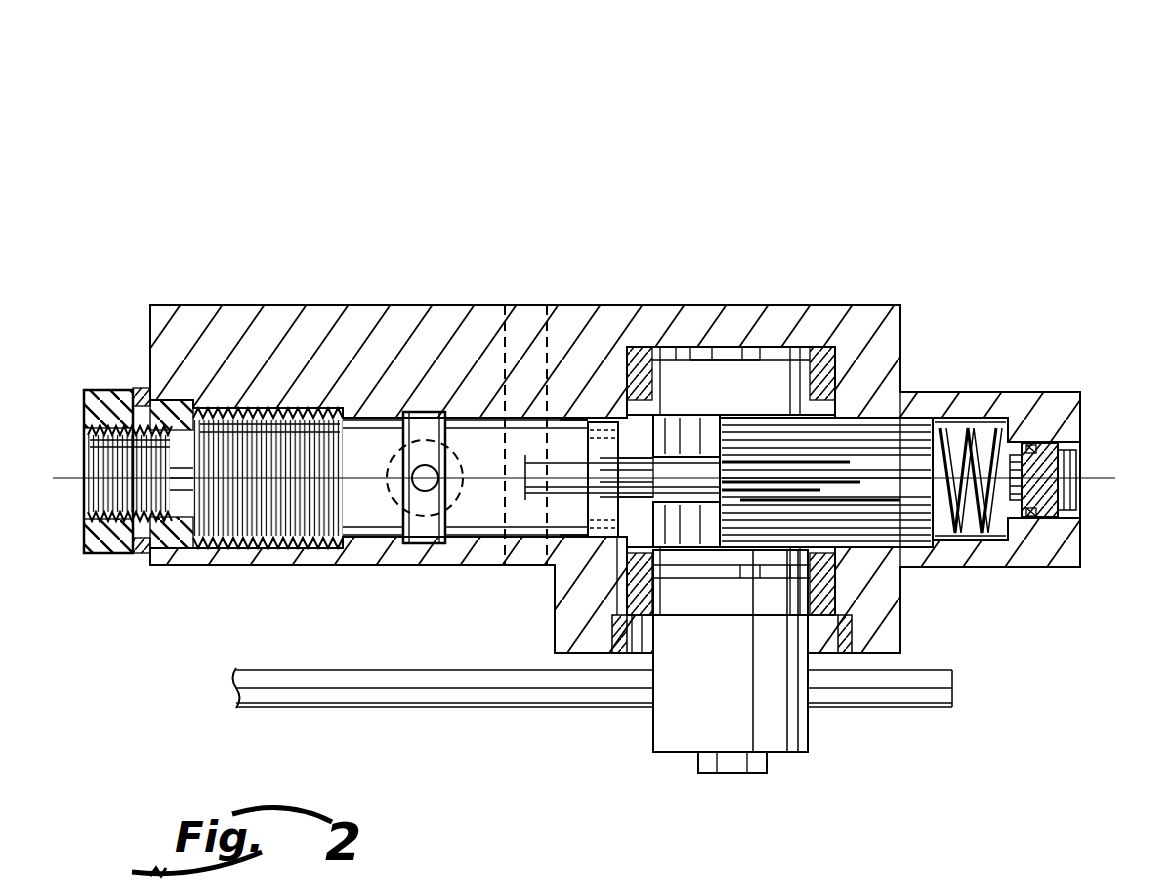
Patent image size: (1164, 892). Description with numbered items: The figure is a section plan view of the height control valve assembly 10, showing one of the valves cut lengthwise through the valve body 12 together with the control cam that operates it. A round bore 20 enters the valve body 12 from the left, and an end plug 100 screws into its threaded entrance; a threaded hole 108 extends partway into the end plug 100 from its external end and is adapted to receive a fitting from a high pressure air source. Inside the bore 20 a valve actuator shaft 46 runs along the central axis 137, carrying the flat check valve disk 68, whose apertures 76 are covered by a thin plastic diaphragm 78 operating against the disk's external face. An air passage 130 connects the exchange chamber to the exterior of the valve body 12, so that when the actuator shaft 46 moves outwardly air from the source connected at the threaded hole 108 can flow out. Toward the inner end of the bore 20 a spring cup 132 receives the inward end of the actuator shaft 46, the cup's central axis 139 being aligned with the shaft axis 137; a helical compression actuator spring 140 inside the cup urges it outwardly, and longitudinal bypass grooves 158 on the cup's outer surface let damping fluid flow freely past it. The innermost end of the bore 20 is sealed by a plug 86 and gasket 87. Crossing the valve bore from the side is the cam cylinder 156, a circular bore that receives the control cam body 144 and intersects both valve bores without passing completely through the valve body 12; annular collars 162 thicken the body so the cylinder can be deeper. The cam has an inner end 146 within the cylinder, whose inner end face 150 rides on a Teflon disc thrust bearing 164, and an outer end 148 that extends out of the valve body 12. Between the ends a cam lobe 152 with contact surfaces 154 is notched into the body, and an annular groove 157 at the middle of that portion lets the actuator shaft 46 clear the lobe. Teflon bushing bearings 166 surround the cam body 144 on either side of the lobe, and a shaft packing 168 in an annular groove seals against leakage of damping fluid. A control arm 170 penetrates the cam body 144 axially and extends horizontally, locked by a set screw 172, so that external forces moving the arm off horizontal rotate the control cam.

The height control valve assembly 10 is at (537, 176).
The valve body 12 is at (908, 306).
The bore 20 is at (377, 523).
The valve actuator shaft 46 is at (527, 493).
The check valve disk 68 is at (593, 498).
The apertures 76 is at (598, 545).
The diaphragm 78 is at (572, 455).
The plug 86 is at (1053, 492).
The gasket 87 is at (1033, 520).
The end plug 100 is at (108, 558).
The threaded hole 108 is at (105, 494).
The air passage 130 is at (423, 427).
The spring cup 132 is at (963, 548).
The central axis of the actuator shaft 137 is at (636, 468).
The central axis of the spring cup 139 is at (858, 472).
The actuator spring 140 is at (1012, 455).
The control cam body 144 is at (773, 735).
The inner end 146 is at (765, 339).
The outer end 148 is at (682, 738).
The control cam inner end face 150 is at (790, 398).
The cam lobe 152 is at (687, 427).
The contact surfaces 154 is at (697, 548).
The cam cylinder 156 is at (860, 370).
The annular groove 157 is at (585, 585).
The bypass grooves 158 is at (948, 430).
The annular collars 162 is at (915, 340).
The disc thrust bearing 164 is at (727, 340).
The bushing bearings 166 is at (868, 320).
The shaft packing 168 is at (797, 573).
The control arm 170 is at (497, 700).
The set screw 172 is at (730, 777).